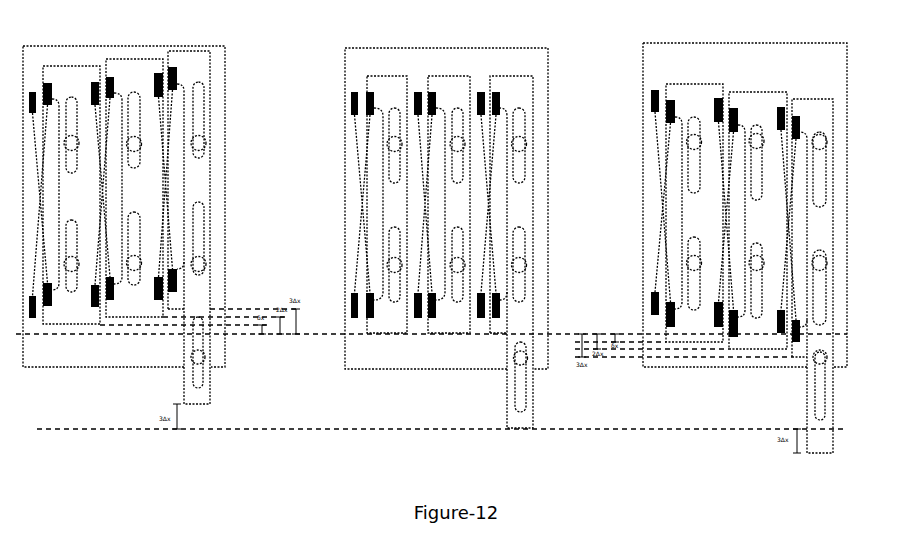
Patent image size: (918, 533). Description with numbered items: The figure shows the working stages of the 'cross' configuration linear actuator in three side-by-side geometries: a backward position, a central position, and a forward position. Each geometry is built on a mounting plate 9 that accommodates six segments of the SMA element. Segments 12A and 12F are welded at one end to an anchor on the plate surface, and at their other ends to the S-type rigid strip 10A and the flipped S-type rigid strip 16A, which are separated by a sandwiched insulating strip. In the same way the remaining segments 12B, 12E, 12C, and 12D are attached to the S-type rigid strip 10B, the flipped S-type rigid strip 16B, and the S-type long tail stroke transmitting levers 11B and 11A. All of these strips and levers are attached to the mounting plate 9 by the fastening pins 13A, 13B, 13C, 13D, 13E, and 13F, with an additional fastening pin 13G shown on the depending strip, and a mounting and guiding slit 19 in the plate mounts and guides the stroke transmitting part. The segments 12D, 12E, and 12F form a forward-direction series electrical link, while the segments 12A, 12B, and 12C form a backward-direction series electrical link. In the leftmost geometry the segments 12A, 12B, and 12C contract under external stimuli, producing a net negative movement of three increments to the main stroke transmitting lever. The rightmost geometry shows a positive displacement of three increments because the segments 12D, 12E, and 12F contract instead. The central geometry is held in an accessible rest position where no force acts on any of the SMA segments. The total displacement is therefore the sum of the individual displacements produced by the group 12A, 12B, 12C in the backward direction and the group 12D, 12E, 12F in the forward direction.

The mounting plate 9 is at (827, 65).
The S-type rigid strip 10A is at (715, 88).
The S-type rigid strip 10B is at (480, 88).
The S-type long tail stroke transmitting lever 11A is at (195, 183).
The S-type long tail stroke transmitting lever 11B is at (177, 298).
The segment of the SMA element 12A is at (657, 148).
The segment of the SMA element 12B is at (412, 115).
The segment of the SMA element 12C is at (185, 230).
The segment of the SMA element 12D is at (173, 115).
The segment of the SMA element 12E is at (385, 310).
The segment of the SMA element 12F is at (660, 247).
The fastening pin 13A is at (688, 143).
The fastening pin 13B is at (688, 262).
The fastening pin 13C is at (460, 115).
The fastening pin 13D is at (458, 272).
The fastening pin 13E is at (199, 143).
The fastening pin 13F is at (199, 265).
The fastening pin 13G is at (520, 363).
The flipped S-type rigid strip 16A is at (703, 323).
The flipped S-type rigid strip 16B is at (468, 317).
The mounting and guiding slit 19 is at (827, 387).